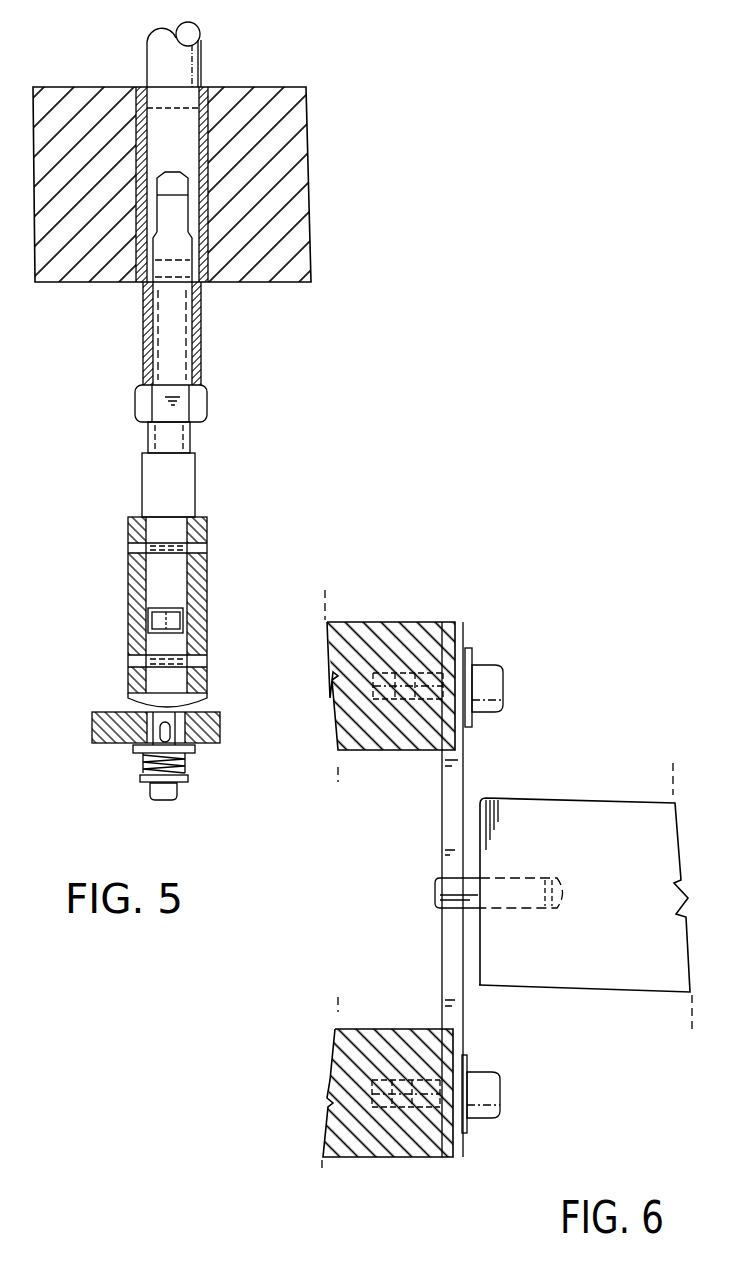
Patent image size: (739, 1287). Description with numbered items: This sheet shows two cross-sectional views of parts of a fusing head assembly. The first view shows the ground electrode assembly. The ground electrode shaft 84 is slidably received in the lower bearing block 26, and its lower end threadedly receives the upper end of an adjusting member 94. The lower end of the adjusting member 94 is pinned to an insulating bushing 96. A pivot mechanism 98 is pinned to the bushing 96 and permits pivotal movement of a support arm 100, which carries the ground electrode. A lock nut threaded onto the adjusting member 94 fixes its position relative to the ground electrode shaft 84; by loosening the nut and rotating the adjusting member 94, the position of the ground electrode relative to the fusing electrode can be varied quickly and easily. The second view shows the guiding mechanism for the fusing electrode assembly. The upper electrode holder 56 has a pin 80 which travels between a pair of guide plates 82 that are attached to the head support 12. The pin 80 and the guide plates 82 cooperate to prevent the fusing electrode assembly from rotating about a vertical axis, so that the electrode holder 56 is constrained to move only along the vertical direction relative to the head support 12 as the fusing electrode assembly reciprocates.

In FIG. 6, the head support 12 is at (375, 622).
In FIG. 5, the lower bearing block 26 is at (300, 146).
In FIG. 6, the upper electrode holder 56 is at (577, 807).
In FIG. 6, the pin 80 is at (433, 905).
In FIG. 6, the guide plates 82 is at (453, 780).
In FIG. 5, the ground electrode shaft 84 is at (203, 60).
In FIG. 5, the adjusting member 94 is at (194, 440).
In FIG. 5, the insulating bushing 96 is at (203, 403).
In FIG. 5, the pivot mechanism 98 is at (201, 767).
In FIG. 5, the support arm 100 is at (220, 726).